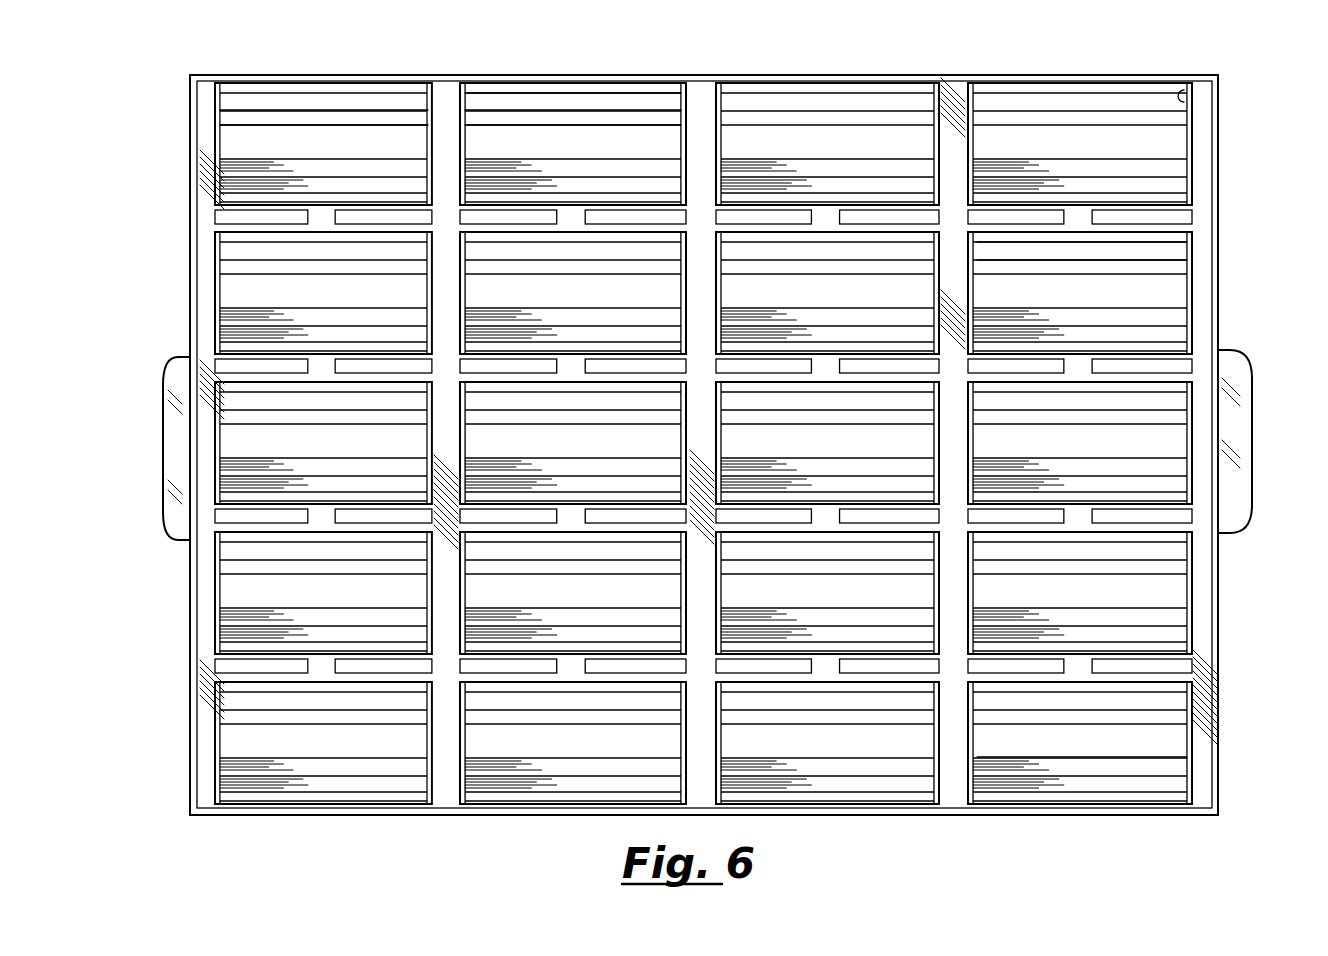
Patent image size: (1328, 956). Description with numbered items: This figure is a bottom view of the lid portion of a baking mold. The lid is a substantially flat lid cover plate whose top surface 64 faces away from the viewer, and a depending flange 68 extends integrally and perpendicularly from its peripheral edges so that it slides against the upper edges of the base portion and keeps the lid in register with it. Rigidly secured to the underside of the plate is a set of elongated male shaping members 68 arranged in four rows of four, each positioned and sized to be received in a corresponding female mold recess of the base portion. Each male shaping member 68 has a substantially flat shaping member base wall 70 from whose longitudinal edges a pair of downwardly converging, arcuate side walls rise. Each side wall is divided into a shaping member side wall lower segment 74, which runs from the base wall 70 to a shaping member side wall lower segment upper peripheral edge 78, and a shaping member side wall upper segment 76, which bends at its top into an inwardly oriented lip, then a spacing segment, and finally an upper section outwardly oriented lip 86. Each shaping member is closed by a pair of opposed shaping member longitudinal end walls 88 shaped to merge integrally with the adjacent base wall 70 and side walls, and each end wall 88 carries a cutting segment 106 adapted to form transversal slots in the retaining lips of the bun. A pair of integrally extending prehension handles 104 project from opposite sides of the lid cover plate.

The top surface 64 is at (205, 102).
The male shaping member 68 is at (195, 318).
The shaping member base wall 70 is at (230, 145).
The shaping member side wall lower segment 74 is at (495, 118).
The shaping member side wall upper segment 76 is at (345, 100).
The shaping member side wall lower segment upper peripheral edge 78 is at (572, 108).
The upper section outwardly oriented lip 86 is at (637, 88).
The shaping member longitudinal end wall 88 is at (212, 263).
The prehension handle 104 is at (170, 458).
The cutting segment 106 is at (1185, 103).